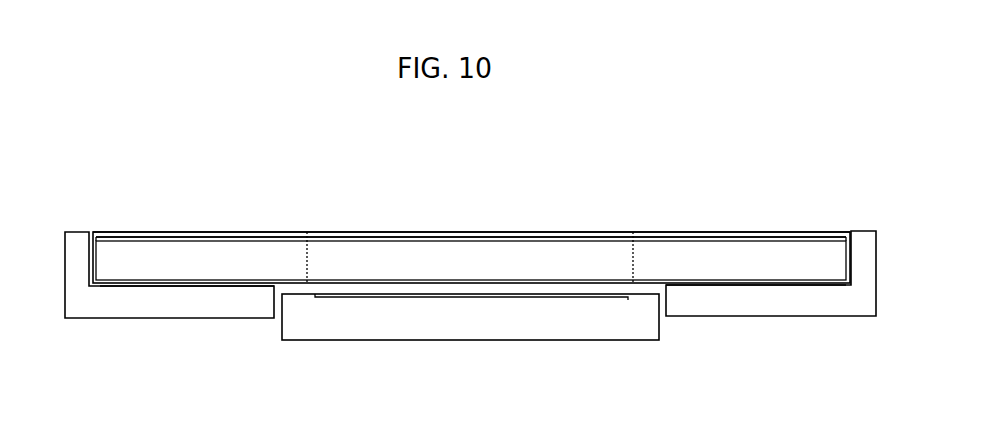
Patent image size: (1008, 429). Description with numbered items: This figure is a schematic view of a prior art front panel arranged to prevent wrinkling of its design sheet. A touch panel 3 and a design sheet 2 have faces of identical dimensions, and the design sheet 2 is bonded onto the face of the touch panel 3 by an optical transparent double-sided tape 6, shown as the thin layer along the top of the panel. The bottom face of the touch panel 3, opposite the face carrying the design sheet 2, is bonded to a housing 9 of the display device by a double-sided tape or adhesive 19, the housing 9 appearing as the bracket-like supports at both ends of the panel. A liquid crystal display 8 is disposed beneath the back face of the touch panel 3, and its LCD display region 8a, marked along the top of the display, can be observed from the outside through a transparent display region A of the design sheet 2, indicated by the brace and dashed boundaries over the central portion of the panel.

The design sheet 2 is at (173, 232).
The optical transparent double-sided tape 6 is at (723, 235).
The transparent display region A is at (304, 217).
The touch panel 3 is at (383, 263).
The liquid crystal display 8 is at (317, 327).
The LCD display region 8a is at (620, 297).
The housing 9 is at (125, 305).
The double-sided tape or adhesive 19 is at (209, 287).